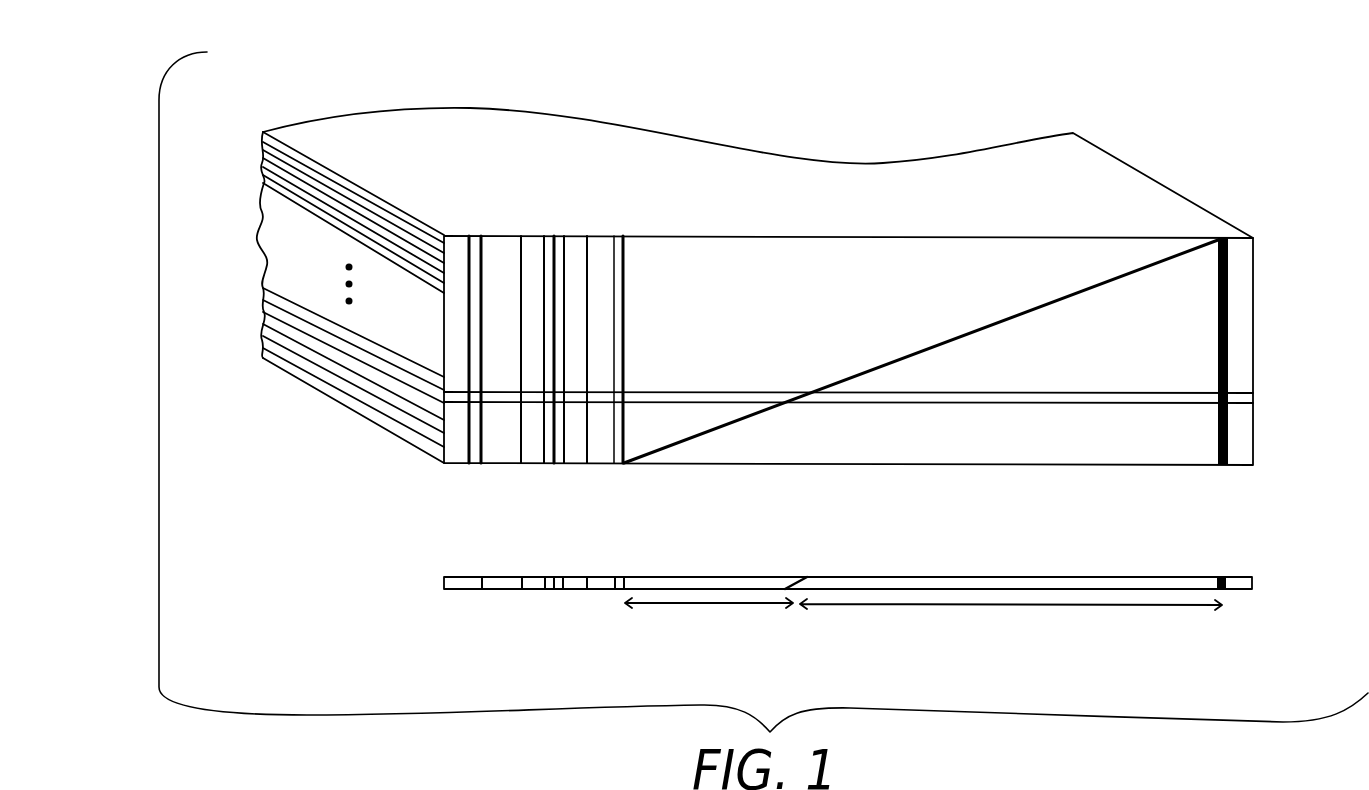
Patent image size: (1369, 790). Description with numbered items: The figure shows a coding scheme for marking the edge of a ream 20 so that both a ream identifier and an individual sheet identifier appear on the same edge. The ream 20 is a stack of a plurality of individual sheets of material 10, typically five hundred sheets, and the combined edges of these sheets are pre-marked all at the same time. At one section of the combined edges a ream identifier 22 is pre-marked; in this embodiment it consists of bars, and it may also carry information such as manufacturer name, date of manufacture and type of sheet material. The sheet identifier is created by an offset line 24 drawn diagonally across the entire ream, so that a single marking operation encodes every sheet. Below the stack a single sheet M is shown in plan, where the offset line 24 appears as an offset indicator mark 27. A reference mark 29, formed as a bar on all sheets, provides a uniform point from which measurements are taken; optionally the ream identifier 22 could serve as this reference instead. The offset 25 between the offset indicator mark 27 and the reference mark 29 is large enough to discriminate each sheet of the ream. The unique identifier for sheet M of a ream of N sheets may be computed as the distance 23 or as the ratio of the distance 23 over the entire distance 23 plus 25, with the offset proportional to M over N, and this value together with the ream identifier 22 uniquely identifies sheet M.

The individual sheets of material 10 is at (290, 300).
The ream 20 is at (425, 463).
The ream identifier 22 is at (623, 467).
The distance 23 is at (735, 604).
The offset line 24 is at (972, 333).
The offset 25 is at (960, 604).
The offset indicator mark 27 is at (807, 577).
The reference mark 29 is at (1229, 303).
The sheet M is at (1247, 399).